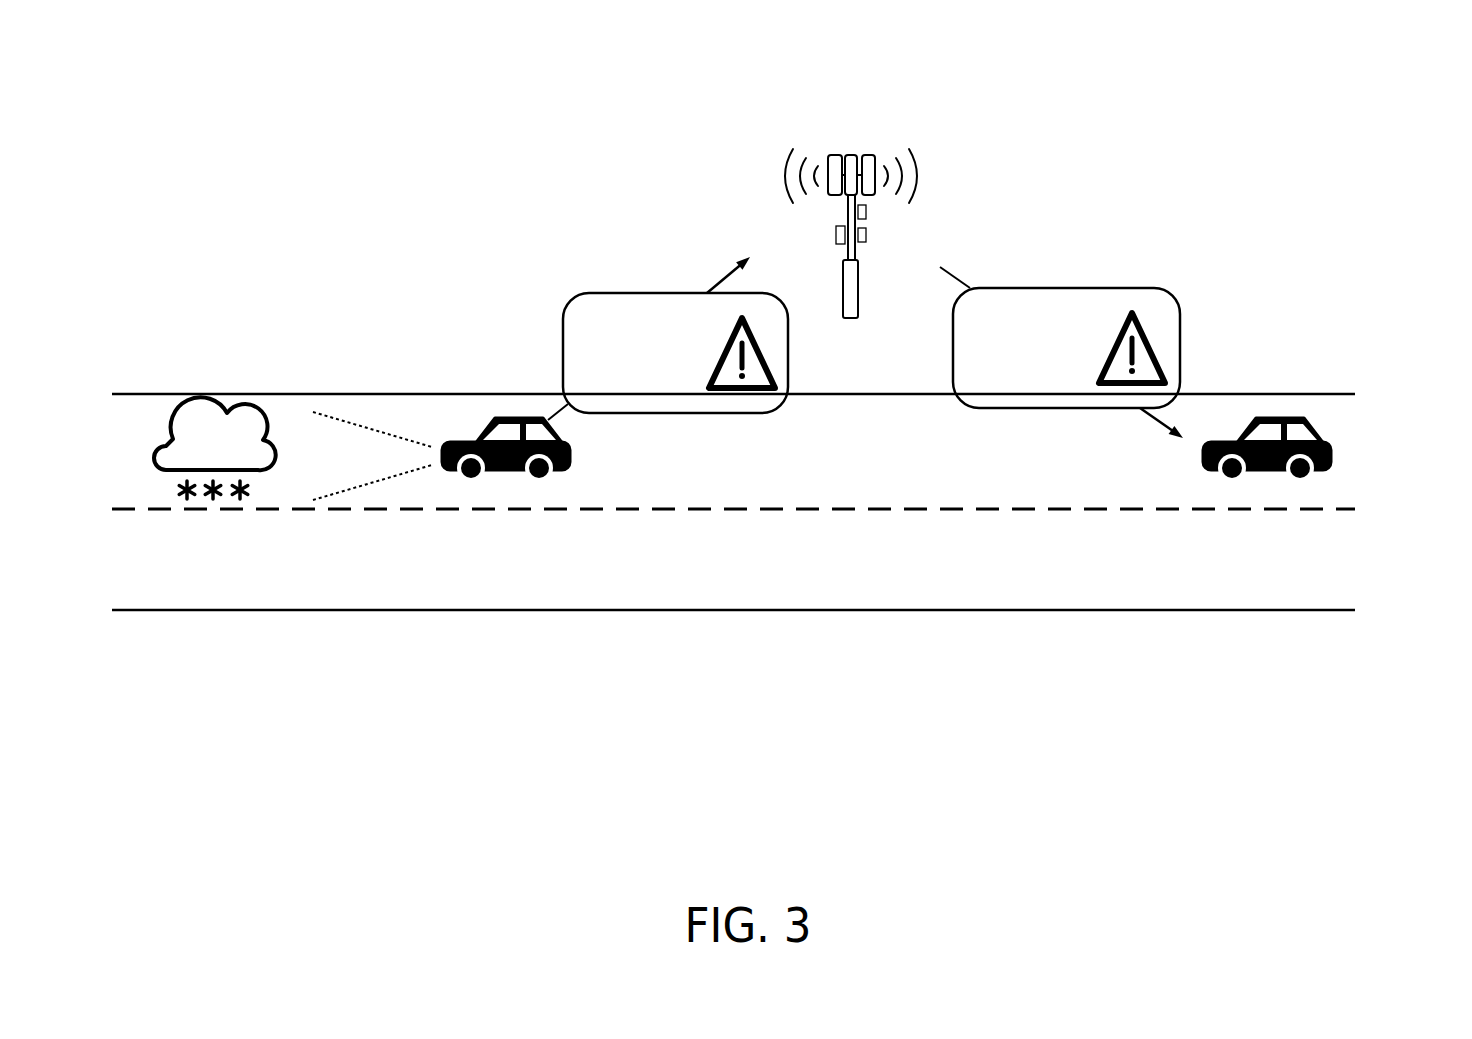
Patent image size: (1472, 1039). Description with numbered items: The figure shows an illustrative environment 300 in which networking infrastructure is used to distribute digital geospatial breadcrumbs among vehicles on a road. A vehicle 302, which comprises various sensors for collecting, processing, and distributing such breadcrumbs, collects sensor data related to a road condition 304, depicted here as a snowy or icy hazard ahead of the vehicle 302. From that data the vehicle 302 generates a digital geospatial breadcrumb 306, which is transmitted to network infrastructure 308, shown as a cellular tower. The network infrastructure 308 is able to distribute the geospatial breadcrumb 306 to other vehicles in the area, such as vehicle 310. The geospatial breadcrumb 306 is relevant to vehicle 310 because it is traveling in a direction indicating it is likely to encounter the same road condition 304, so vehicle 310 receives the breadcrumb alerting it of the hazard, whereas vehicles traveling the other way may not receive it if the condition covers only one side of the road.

The environment 300 is at (1324, 64).
The vehicle 302 is at (507, 418).
The road condition 304 is at (202, 398).
The geospatial breadcrumb 306 is at (873, 347).
The network infrastructure 308 is at (860, 152).
The vehicle 310 is at (1302, 422).